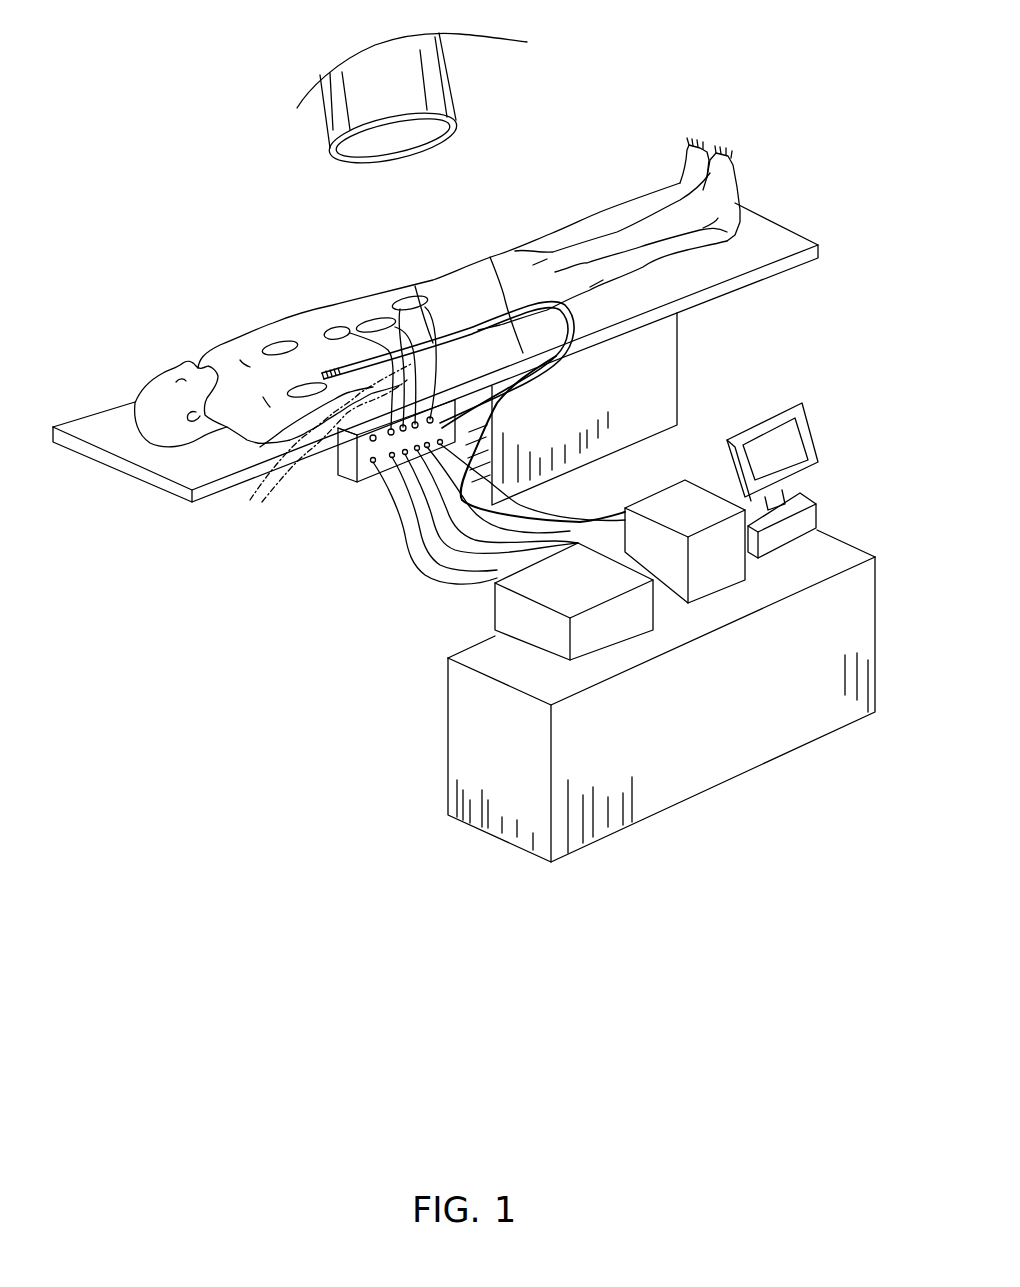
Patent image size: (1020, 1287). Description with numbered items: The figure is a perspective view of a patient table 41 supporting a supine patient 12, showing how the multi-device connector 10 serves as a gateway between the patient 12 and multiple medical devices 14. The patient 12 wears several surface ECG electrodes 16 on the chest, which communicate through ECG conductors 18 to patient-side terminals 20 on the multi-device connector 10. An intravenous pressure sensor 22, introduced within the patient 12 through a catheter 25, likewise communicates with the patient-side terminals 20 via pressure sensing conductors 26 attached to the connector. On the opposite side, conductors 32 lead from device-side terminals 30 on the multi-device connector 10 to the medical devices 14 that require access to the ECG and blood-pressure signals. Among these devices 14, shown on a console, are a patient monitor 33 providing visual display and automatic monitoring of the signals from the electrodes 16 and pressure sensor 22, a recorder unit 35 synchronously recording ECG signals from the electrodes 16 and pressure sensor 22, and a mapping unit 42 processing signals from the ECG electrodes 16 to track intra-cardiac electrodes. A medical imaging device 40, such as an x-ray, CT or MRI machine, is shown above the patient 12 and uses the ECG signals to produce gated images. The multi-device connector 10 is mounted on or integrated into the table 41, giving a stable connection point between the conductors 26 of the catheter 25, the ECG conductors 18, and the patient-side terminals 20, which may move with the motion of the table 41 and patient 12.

The multi-device connector 10 is at (297, 543).
The patient 12 is at (100, 396).
The medical devices 14 is at (637, 618).
The surface ECG electrodes 16 is at (347, 323).
The ECG conductors 18 is at (328, 414).
The patient-side terminals 20 is at (357, 440).
The intravenous pressure sensor 22 is at (318, 373).
The catheter 25 is at (482, 310).
The pressure sensing conductors 26 is at (518, 410).
The device-side terminals 30 is at (370, 462).
The conductors 32 is at (433, 572).
The patient monitor 33 is at (803, 520).
The recorder unit 35 is at (673, 497).
The medical imaging device 40 is at (437, 85).
The table 41 is at (180, 472).
The mapping unit 42 is at (603, 638).